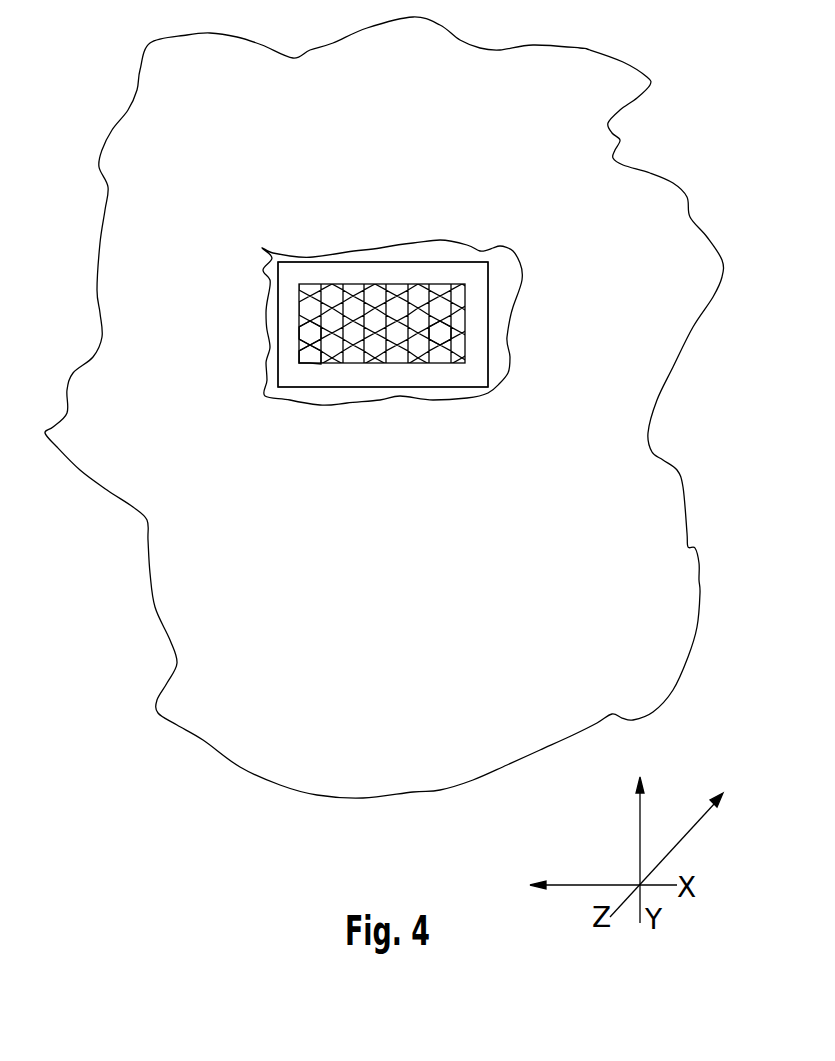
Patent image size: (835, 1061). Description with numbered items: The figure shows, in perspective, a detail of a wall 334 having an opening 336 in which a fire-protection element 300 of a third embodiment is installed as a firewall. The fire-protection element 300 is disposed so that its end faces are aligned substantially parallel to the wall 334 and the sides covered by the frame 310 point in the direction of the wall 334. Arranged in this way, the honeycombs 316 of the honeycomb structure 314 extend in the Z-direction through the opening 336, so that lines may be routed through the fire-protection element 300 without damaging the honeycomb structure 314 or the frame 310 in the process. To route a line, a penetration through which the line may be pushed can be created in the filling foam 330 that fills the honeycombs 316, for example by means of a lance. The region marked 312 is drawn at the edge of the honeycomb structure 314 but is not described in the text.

The fire-protection element 300 is at (352, 257).
The frame 310 is at (482, 313).
The cellular core 312 is at (299, 305).
The honeycomb structure 314 is at (318, 350).
The honeycombs 316 is at (314, 333).
The filling foam 330 is at (436, 332).
The wall 334 is at (407, 594).
The opening 336 is at (522, 268).